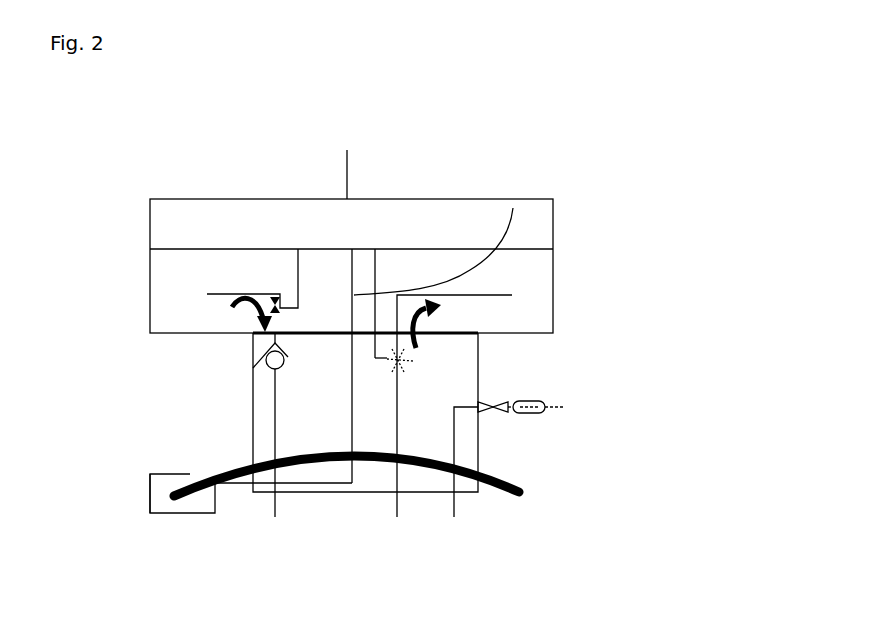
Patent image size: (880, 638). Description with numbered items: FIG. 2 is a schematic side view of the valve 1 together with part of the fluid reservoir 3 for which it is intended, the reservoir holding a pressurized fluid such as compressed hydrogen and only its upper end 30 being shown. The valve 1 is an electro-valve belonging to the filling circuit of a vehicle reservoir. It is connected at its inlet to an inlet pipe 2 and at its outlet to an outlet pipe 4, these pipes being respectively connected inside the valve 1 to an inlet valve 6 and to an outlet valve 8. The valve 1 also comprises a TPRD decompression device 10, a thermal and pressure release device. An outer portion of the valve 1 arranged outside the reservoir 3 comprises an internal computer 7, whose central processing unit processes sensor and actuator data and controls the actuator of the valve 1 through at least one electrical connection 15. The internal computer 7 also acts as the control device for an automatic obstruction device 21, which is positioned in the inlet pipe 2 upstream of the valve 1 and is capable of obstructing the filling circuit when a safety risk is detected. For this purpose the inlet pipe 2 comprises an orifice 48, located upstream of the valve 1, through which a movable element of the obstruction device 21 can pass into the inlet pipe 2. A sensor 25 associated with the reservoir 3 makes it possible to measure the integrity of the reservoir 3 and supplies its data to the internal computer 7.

The valve 1 is at (578, 254).
The inlet pipe 2 is at (222, 299).
The fluid reservoir 3 is at (437, 528).
The outlet pipe 4 is at (472, 296).
The inlet valve 6 is at (289, 360).
The internal computer 7 is at (388, 195).
The outlet valve 8 is at (413, 361).
The TPRD decompression device 10 is at (510, 421).
The electrical connection 15 is at (297, 274).
The obstruction device 21 is at (277, 293).
The sensor 25 is at (150, 493).
The upper end 30 is at (227, 478).
The orifice 48 is at (276, 312).